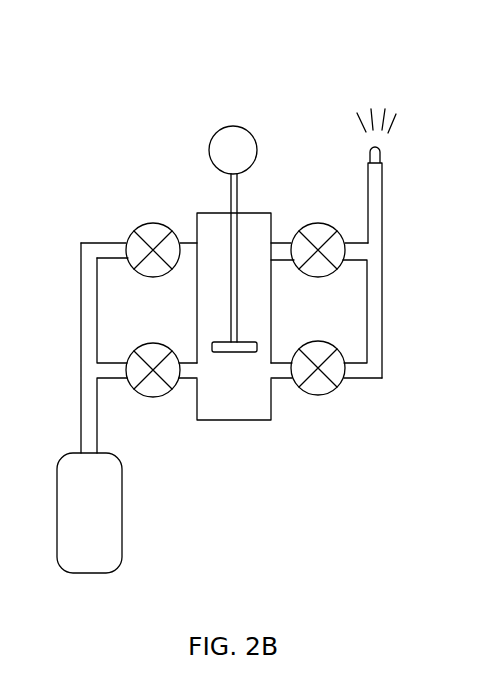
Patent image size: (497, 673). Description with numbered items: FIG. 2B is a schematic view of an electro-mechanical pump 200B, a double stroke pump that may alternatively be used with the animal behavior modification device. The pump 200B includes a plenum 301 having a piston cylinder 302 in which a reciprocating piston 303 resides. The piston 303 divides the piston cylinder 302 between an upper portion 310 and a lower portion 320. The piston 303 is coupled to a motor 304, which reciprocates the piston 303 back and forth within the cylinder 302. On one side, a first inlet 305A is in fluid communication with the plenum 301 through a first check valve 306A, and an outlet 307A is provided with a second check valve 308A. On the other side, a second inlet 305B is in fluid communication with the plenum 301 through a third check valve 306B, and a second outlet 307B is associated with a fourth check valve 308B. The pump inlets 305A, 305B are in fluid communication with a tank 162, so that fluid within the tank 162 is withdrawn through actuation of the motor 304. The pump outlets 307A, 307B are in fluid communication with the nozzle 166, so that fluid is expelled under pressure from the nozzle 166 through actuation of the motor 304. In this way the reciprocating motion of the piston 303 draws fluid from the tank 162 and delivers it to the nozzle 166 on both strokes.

The electro-mechanical pump 200B is at (124, 96).
The motor 304 is at (229, 126).
The reciprocating piston 303 is at (230, 306).
The plenum 301 is at (273, 341).
The piston cylinder 302 is at (197, 405).
The upper portion 310 is at (251, 257).
The lower portion 320 is at (222, 402).
The third check valve 306B is at (134, 233).
The second inlet 305B is at (197, 240).
The first check valve 306A is at (151, 343).
The first inlet 305A is at (190, 380).
The tank 162 is at (122, 527).
The fourth check valve 308B is at (321, 224).
The second outlet 307B is at (288, 262).
The second check valve 308A is at (322, 397).
The outlet 307A is at (272, 383).
The nozzle 166 is at (383, 157).